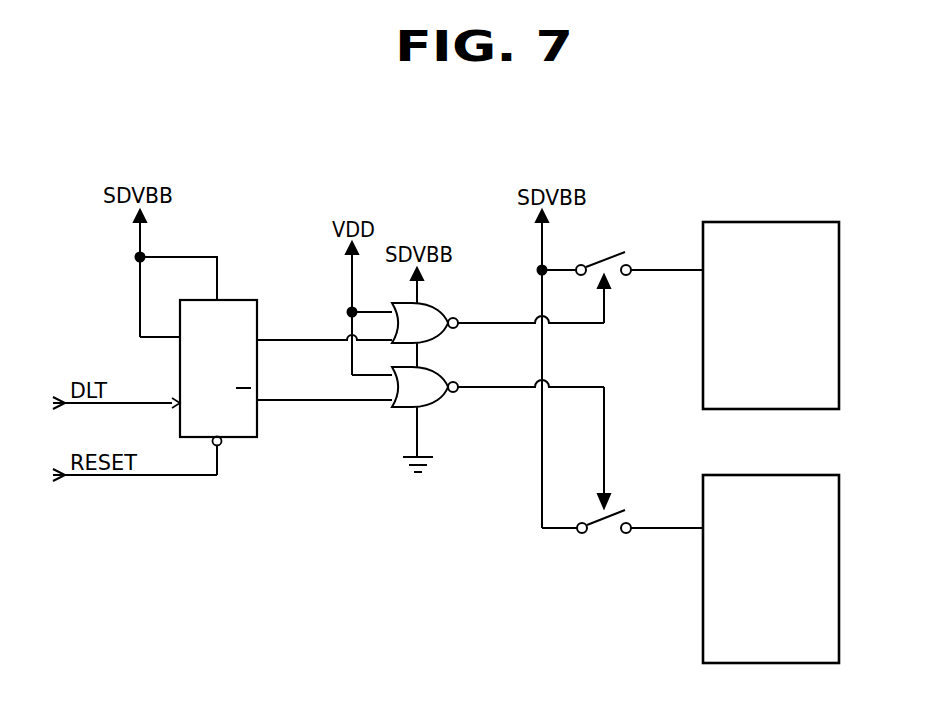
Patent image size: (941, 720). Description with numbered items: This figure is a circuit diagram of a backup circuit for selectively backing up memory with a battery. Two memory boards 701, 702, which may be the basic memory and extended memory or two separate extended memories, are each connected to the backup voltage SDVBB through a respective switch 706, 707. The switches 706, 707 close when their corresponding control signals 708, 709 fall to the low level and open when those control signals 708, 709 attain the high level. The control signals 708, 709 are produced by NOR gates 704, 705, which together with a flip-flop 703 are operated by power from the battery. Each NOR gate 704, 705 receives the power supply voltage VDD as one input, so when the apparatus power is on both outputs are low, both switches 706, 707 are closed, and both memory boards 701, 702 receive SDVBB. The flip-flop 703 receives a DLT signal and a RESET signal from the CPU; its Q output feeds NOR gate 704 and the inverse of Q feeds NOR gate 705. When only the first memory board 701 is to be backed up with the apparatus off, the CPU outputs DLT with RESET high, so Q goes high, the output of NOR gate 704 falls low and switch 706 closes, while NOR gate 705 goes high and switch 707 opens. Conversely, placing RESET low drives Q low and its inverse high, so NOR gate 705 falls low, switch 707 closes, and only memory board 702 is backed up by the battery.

The memory board 701 is at (841, 325).
The memory board 702 is at (841, 572).
The flip-flop 703 is at (247, 439).
The NOR gate 704 is at (438, 304).
The NOR gate 705 is at (440, 407).
The switch 706 is at (625, 260).
The switch 707 is at (625, 507).
The control signal 708 is at (593, 324).
The control signal 709 is at (578, 388).